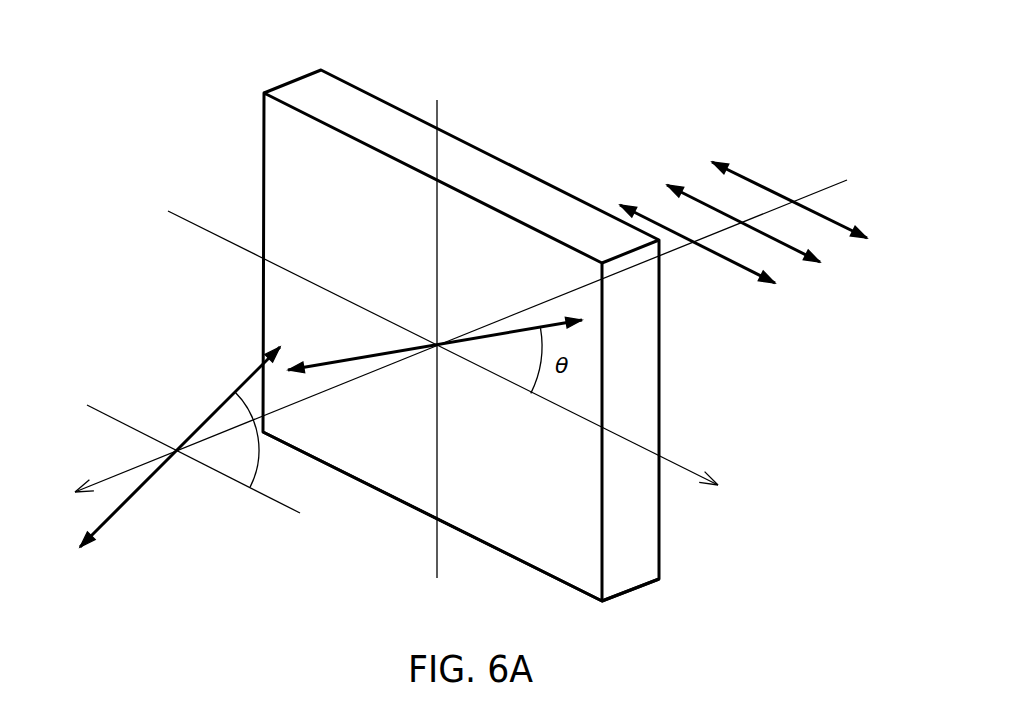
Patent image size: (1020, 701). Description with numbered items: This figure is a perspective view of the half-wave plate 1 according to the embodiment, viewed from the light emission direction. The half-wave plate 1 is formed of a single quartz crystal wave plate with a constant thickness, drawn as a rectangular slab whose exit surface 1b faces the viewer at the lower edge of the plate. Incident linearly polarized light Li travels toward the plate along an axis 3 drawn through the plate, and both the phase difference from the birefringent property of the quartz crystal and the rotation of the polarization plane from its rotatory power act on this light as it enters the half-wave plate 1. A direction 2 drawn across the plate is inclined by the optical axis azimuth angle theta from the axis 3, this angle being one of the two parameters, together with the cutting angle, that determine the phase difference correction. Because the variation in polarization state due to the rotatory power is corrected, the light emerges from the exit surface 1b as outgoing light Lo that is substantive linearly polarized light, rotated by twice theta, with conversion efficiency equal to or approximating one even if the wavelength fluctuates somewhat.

The half-wave plate 1 is at (365, 105).
The exit surface 1b is at (540, 543).
The polarization direction of outgoing light 2 is at (517, 328).
The optic axis / reference axis 3 is at (207, 230).
The incident linearly polarized light Li is at (820, 190).
The outgoing light Lo is at (132, 467).